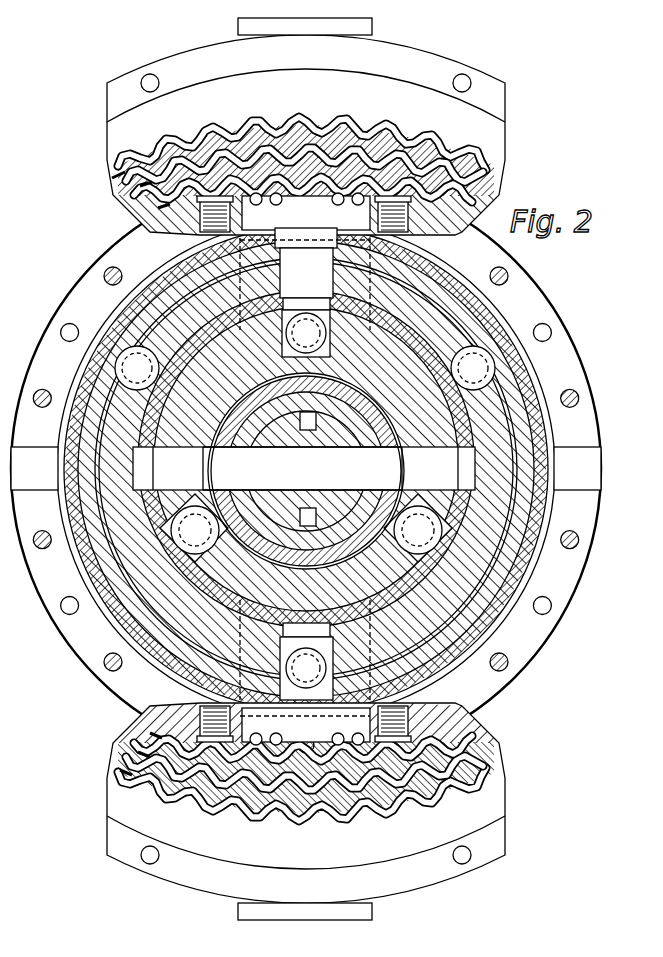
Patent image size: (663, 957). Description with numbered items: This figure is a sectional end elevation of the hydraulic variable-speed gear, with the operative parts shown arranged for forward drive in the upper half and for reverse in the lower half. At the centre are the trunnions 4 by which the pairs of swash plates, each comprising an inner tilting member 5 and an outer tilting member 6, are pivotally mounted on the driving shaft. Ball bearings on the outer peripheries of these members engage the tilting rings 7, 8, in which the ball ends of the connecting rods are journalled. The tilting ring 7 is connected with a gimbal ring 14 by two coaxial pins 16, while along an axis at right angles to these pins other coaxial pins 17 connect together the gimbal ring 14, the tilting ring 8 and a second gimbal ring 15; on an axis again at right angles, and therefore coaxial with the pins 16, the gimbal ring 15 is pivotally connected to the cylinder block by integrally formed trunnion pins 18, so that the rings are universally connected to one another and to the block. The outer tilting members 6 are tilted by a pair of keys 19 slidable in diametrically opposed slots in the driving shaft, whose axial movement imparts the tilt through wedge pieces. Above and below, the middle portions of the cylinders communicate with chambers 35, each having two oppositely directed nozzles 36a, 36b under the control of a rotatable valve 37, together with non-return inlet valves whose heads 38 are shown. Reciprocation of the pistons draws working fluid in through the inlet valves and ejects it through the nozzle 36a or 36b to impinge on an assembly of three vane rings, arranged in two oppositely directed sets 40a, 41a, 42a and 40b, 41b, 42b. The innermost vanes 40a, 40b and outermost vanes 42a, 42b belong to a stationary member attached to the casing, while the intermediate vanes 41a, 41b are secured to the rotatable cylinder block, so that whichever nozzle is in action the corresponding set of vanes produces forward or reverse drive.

The trunnions 4 is at (302, 468).
The inner tilting member 5 is at (258, 413).
The outer tilting member 6 is at (268, 406).
The tilting ring 7 is at (332, 545).
The tilting ring 8 is at (306, 469).
The gimbal ring 14 is at (492, 598).
The gimbal ring 15 is at (470, 640).
The coaxial pins 16 is at (305, 454).
The coaxial pins 17 is at (180, 690).
The trunnion pins 18 is at (306, 468).
The keys 19 is at (308, 424).
The chambers 35 is at (246, 128).
The nozzle 36a is at (270, 185).
The nozzle 36b is at (337, 163).
The rotatable valve 37 is at (335, 185).
The inlet valve heads 38 is at (304, 469).
The innermost vane ring set 40a is at (165, 203).
The innermost vane ring set 40b is at (150, 732).
The intermediate vane ring set 41a is at (150, 183).
The intermediate vane ring set 41b is at (140, 752).
The outermost vane ring set 42a is at (118, 173).
The outermost vane ring set 42b is at (122, 770).